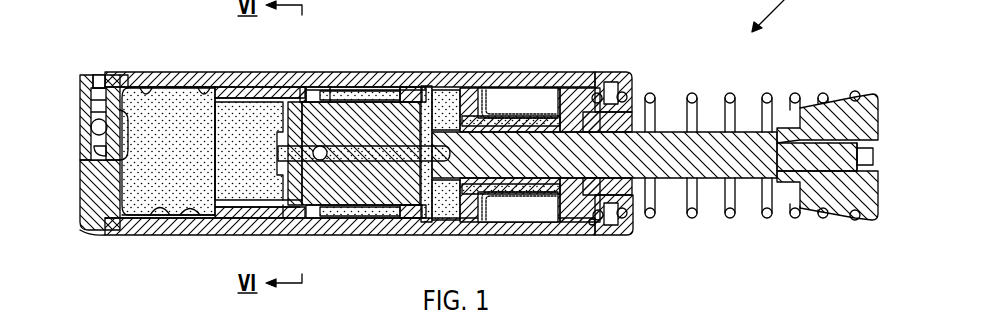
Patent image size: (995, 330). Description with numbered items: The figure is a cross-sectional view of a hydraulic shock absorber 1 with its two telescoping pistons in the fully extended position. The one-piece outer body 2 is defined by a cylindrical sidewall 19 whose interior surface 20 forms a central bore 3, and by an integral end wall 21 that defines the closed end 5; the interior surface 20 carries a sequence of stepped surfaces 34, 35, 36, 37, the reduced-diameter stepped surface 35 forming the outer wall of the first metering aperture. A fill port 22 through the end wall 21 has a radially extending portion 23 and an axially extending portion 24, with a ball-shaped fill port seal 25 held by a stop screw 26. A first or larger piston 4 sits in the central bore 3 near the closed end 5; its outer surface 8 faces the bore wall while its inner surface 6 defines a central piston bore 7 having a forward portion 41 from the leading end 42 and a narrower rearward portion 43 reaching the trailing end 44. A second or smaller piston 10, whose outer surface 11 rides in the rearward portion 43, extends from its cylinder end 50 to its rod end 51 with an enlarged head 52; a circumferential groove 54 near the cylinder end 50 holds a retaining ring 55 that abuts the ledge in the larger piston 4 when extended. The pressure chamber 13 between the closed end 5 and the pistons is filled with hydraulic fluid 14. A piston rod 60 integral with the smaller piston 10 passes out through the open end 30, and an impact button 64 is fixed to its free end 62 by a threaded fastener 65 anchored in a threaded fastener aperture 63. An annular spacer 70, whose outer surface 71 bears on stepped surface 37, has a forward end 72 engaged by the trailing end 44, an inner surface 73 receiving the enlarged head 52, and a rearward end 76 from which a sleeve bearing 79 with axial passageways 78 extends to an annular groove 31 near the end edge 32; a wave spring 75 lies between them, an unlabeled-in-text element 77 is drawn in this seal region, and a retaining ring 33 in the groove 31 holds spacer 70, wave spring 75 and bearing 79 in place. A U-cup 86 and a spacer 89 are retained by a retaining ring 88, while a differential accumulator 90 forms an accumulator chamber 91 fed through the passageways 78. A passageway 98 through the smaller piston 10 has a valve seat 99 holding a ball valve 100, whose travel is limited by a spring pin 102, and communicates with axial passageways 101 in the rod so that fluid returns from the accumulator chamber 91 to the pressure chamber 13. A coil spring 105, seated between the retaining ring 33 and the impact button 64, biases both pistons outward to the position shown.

The hydraulic shock absorber 1 is at (764, 329).
The outer body 2 is at (545, 73).
The central bore 3 is at (166, 100).
The first or larger piston 4 is at (301, 76).
The closed end 5 is at (135, 226).
The inner surface 6 is at (296, 118).
The central piston bore 7 is at (218, 138).
The outer surface 8 is at (265, 90).
The second or smaller piston 10 is at (409, 88).
The outer surface 11 is at (374, 93).
The pressure chamber 13 is at (168, 151).
The hydraulic fluid 14 is at (175, 222).
The sidewall 19 is at (132, 230).
The interior surface 20 is at (138, 100).
The end wall 21 is at (90, 214).
The fill port 22 is at (88, 162).
The radially extending portion 23 is at (92, 114).
The axially extending portion 24 is at (110, 80).
The fill port seal 25 is at (91, 128).
The stop screw 26 is at (98, 80).
The open end 30 is at (628, 96).
The annular groove 31 is at (612, 232).
The end edge 32 is at (636, 236).
The retaining ring 33 is at (598, 88).
The stepped surface 34 is at (170, 226).
The stepped surface 35 is at (204, 95).
The stepped surface 36 is at (278, 95).
The stepped surface 37 is at (498, 112).
The forward portion 41 is at (222, 224).
The leading end 42 is at (200, 224).
The rearward portion 43 is at (326, 88).
The trailing end 44 is at (337, 88).
The cylinder end 50 is at (262, 223).
The rod end 51 is at (386, 218).
The enlarged head 52 is at (428, 86).
The circumferential groove 54 is at (270, 96).
The retaining ring 55 is at (292, 224).
The piston rod 60 is at (748, 196).
The free end 62 is at (830, 126).
The threaded fastener aperture 63 is at (821, 192).
The impact button 64 is at (878, 100).
The threaded fastener 65 is at (872, 158).
The spacer 70 is at (410, 73).
The outer surface 71 is at (360, 87).
The forward end 72 is at (316, 236).
The inner surface 73 is at (358, 218).
The wave spring 75 is at (446, 92).
The rearward end 76 is at (473, 222).
The lower seal element 77 is at (450, 222).
The passageways 78 is at (478, 95).
The bearing 79 is at (612, 88).
The U-cup 86 is at (577, 222).
The retaining ring 88 is at (638, 122).
The spacer 89 is at (617, 232).
The differential accumulator 90 is at (532, 90).
The accumulator chamber 91 is at (514, 222).
The passageway 98 is at (345, 152).
The valve seat 99 is at (298, 150).
The ball valve 100 is at (285, 168).
The passageways 101 is at (442, 136).
The spring pin 102 is at (320, 161).
The spring 105 is at (776, 134).